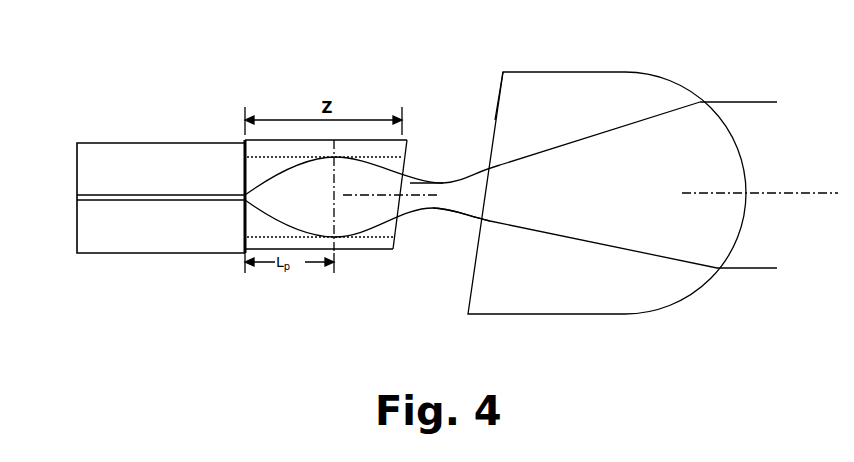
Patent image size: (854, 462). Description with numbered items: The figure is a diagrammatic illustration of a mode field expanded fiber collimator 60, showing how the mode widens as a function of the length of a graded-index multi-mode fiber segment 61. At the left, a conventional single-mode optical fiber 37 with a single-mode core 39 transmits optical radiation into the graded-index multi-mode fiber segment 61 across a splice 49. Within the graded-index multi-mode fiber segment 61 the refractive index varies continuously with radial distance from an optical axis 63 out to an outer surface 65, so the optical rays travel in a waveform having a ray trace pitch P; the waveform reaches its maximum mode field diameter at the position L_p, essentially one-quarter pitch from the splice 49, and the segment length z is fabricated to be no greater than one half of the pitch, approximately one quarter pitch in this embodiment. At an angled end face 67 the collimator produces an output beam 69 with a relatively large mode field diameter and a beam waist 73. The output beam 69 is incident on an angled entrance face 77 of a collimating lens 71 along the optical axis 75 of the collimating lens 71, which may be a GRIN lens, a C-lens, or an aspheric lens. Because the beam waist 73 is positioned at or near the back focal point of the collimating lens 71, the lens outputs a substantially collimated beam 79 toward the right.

The optical fiber 37 is at (167, 242).
The single-mode core 39 is at (191, 200).
The splice 49 is at (245, 232).
The mode field expanded fiber collimator 60 is at (254, 49).
The graded-index multi-mode fiber segment 61 is at (385, 242).
The optical axis 63 is at (425, 196).
The outer surface 65 is at (353, 250).
The angled end face 67 is at (396, 240).
The output beam 69 is at (460, 198).
The collimating lens 71 is at (553, 97).
The beam waist 73 is at (445, 185).
The optical axis of the collimating lens 75 is at (813, 193).
The angled entrance face 77 is at (497, 100).
The collimated beam 79 is at (762, 102).